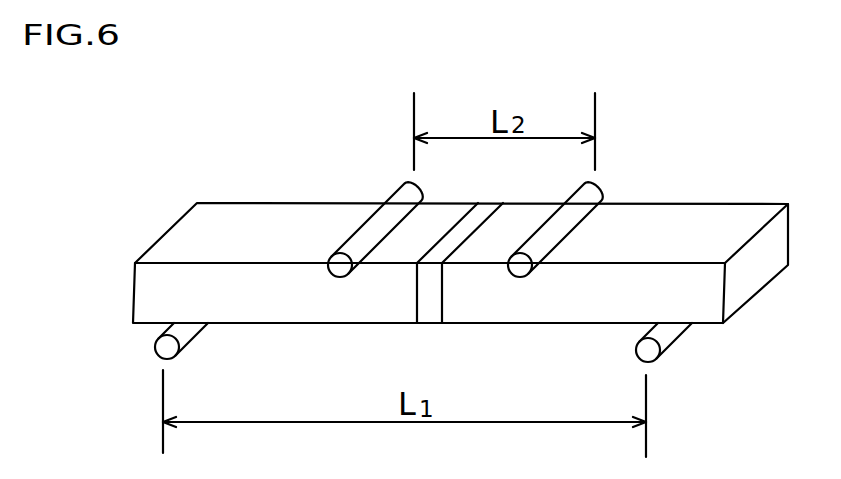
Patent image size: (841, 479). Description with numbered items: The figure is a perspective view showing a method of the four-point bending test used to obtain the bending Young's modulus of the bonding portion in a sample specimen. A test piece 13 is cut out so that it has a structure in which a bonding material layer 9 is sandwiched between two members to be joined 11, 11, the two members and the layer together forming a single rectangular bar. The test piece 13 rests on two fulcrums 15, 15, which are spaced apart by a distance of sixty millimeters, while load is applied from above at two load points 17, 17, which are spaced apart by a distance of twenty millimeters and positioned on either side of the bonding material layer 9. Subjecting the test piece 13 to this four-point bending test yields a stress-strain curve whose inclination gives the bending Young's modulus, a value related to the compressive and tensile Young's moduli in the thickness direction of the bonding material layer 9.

The test piece 13 is at (471, 219).
The member to be joined 11 is at (252, 218).
The bonding material layer 9 is at (458, 233).
The load point 17 is at (358, 237).
The fulcrum 15 is at (190, 333).